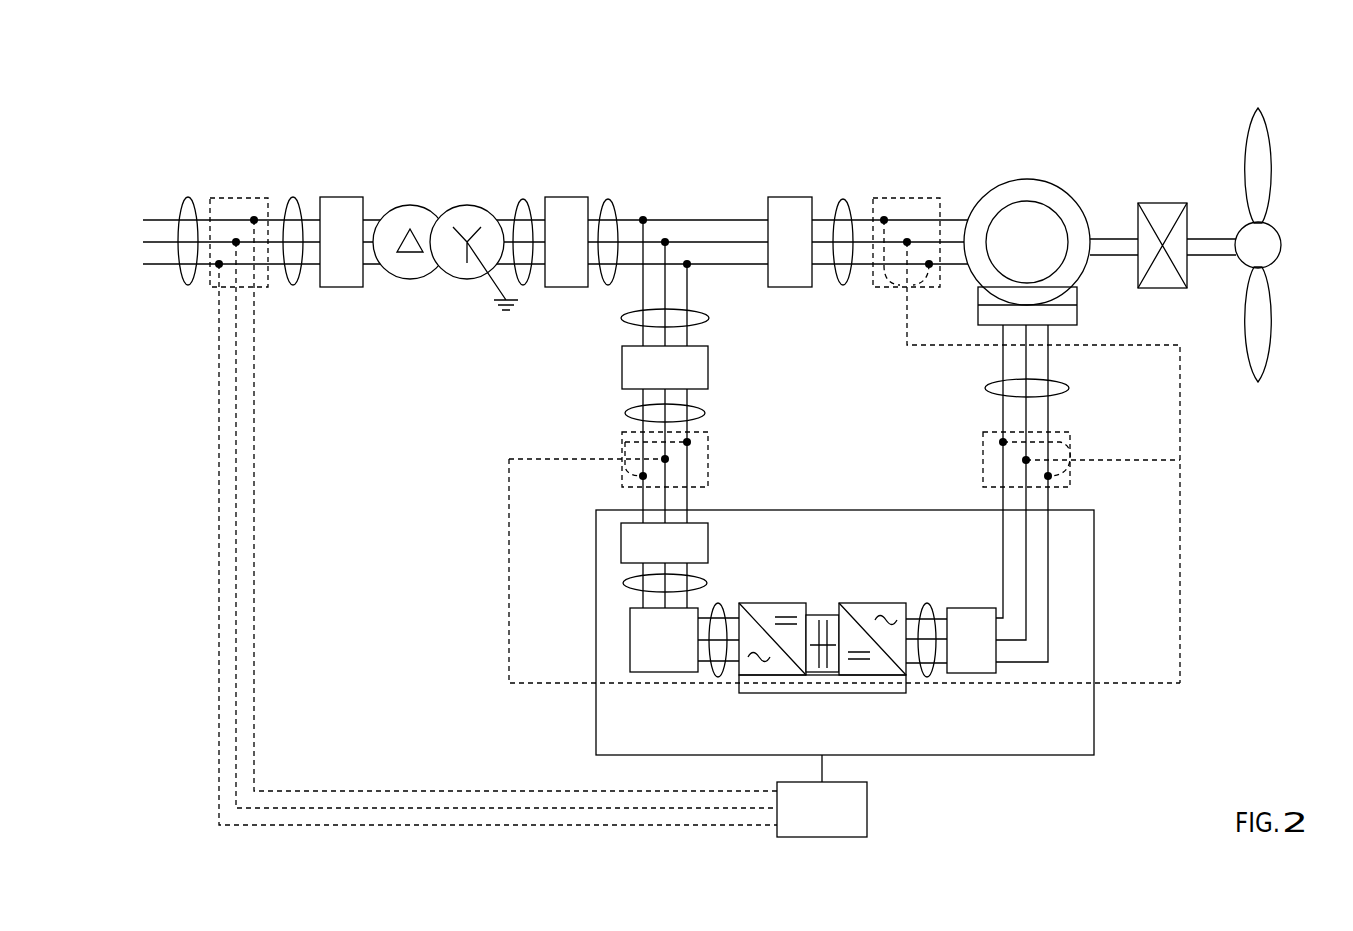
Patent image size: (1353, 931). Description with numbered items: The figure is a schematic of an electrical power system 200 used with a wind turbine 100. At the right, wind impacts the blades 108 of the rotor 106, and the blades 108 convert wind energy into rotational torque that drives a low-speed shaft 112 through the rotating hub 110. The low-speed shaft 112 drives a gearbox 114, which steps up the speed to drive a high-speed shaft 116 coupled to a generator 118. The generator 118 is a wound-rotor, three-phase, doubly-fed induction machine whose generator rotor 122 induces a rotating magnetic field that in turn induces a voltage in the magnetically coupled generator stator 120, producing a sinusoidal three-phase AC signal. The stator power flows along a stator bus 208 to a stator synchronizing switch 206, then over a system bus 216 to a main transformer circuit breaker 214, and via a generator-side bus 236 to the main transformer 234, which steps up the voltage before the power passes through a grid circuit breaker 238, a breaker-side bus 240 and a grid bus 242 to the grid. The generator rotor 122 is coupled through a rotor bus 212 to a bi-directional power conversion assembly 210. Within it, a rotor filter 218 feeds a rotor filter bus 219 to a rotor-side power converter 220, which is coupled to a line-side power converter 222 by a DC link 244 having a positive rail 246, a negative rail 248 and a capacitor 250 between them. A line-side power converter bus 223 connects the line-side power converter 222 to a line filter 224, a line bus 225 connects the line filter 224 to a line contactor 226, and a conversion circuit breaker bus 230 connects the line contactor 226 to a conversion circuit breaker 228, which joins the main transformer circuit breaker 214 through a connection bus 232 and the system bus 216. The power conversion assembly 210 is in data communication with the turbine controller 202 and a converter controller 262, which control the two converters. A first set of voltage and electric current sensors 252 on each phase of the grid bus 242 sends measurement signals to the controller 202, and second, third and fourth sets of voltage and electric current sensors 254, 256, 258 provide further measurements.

The wind turbine 100 is at (1284, 235).
The rotor 106 is at (1294, 263).
The blades 108 is at (1273, 160).
The rotating hub 110 is at (1279, 252).
The low-speed shaft 112 is at (1200, 238).
The gearbox 114 is at (1162, 203).
The high-speed shaft 116 is at (1126, 238).
The generator 118 is at (1030, 209).
The generator stator 120 is at (1048, 180).
The generator rotor 122 is at (1005, 222).
The electrical power system 200 is at (410, 125).
The turbine controller 202 is at (840, 825).
The stator synchronizing switch 206 is at (790, 197).
The stator bus 208 is at (841, 200).
The power conversion assembly 210 is at (1094, 600).
The rotor bus 212 is at (1069, 394).
The main transformer circuit breaker 214 is at (565, 197).
The system bus 216 is at (606, 200).
The rotor filter 218 is at (955, 608).
The rotor filter bus 219 is at (927, 603).
The rotor-side power converter 220 is at (906, 675).
The line-side power converter 222 is at (737, 673).
The line-side power converter bus 223 is at (718, 605).
The line filter 224 is at (630, 648).
The line bus 225 is at (625, 583).
The line contactor 226 is at (621, 545).
The conversion circuit breaker 228 is at (708, 368).
The conversion circuit breaker bus 230 is at (705, 413).
The connection bus 232 is at (710, 318).
The main transformer 234 is at (466, 205).
The generator-side bus 236 is at (521, 200).
The grid circuit breaker 238 is at (340, 197).
The breaker-side bus 240 is at (291, 197).
The grid bus 242 is at (186, 197).
The DC link 244 is at (822, 632).
The positive rail 246 is at (828, 614).
The negative rail 248 is at (828, 678).
The capacitor 250 is at (822, 642).
The first set of voltage and electric current sensors 252 is at (232, 198).
The second set of voltage and electric current sensors 254 is at (905, 186).
The third set of voltage and electric current sensors 256 is at (983, 462).
The fourth set of voltage and electric current sensors 258 is at (708, 470).
The converter controller 262 is at (868, 688).